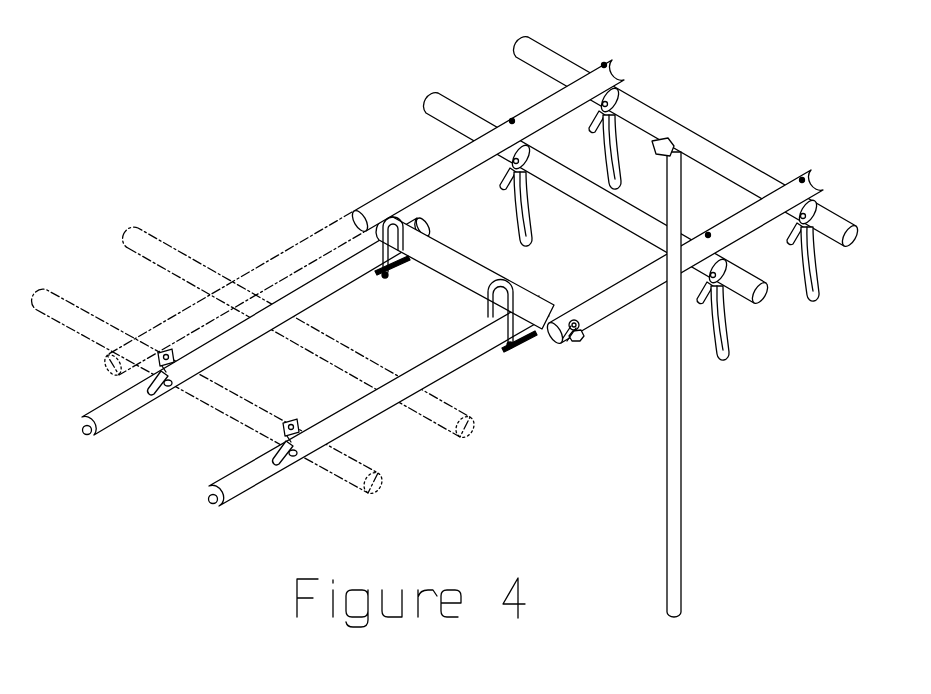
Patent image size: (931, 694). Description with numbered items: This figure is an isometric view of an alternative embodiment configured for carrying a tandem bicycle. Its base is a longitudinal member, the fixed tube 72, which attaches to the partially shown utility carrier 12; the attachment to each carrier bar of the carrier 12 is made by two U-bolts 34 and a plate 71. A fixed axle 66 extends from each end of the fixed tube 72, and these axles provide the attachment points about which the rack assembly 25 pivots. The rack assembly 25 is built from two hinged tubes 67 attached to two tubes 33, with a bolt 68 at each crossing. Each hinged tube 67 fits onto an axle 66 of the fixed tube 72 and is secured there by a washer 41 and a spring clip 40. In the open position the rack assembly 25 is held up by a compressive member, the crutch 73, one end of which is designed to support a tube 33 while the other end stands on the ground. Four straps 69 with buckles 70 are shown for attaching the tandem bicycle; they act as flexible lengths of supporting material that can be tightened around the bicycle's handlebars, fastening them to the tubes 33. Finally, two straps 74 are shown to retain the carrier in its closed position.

The utility carrier 12 is at (227, 516).
The rack assembly 25 is at (210, 250).
The tubes 33 is at (538, 52).
The U-bolts 34 is at (372, 214).
The spring clip 40 is at (575, 320).
The washer 41 is at (567, 343).
The fixed axle 66 is at (582, 340).
The hinged tubes 67 is at (440, 166).
The bolt 68 is at (604, 63).
The straps 69 is at (530, 239).
The buckles 70 is at (513, 168).
The plate 71 is at (405, 262).
The fixed tube 72 is at (465, 283).
The crutch 73 is at (672, 423).
The straps 74 is at (163, 397).